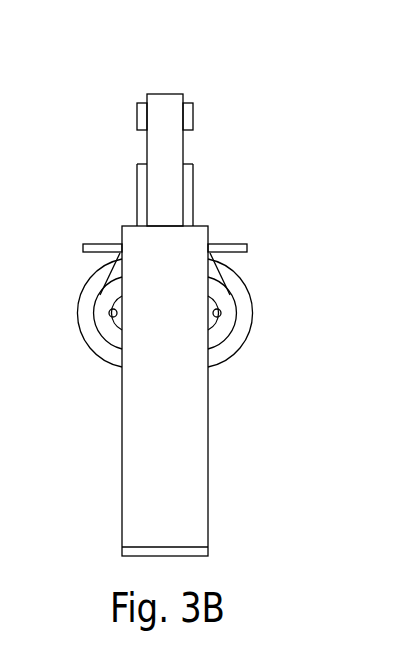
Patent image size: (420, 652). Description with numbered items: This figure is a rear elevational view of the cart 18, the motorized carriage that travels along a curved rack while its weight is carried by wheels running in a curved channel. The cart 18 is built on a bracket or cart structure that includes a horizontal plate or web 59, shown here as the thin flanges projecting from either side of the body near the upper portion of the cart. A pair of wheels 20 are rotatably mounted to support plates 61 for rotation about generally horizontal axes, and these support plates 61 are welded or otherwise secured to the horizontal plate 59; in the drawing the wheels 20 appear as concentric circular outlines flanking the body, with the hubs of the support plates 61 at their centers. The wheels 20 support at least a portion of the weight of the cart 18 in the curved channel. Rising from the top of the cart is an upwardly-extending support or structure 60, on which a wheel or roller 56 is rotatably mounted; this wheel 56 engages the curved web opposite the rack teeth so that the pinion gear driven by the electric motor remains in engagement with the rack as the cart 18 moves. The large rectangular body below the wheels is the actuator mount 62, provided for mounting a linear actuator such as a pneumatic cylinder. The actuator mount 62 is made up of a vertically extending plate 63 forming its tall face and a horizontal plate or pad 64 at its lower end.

The cart 18 is at (86, 206).
The wheel 20 is at (217, 367).
The wheel or roller 56 is at (193, 117).
The horizontal plate or web 59 is at (233, 244).
The upwardly-extending support or structure 60 is at (183, 148).
The support plates 61 is at (113, 292).
The actuator mount 62 is at (198, 485).
The vertically extending plate 63 is at (137, 463).
The horizontal plate or pad 64 is at (187, 556).